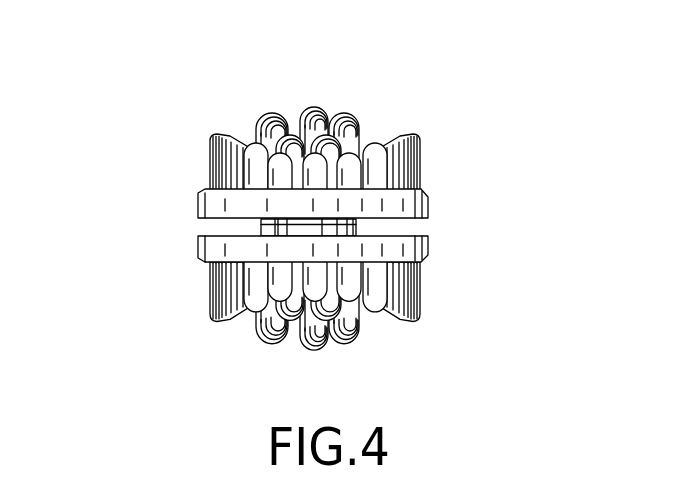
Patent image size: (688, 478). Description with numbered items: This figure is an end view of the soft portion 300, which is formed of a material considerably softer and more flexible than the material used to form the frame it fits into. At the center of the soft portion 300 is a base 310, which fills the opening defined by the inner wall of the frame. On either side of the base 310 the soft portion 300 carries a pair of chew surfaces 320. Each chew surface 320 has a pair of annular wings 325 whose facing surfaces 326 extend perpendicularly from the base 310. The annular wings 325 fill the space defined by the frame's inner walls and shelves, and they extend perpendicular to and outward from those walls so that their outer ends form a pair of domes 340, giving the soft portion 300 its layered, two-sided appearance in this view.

The soft portion 300 is at (337, 219).
The base 310 is at (356, 225).
The chew surfaces 320 is at (233, 100).
The annular wings 325 is at (203, 207).
The facing surfaces 326 is at (212, 236).
The domes 340 is at (403, 340).